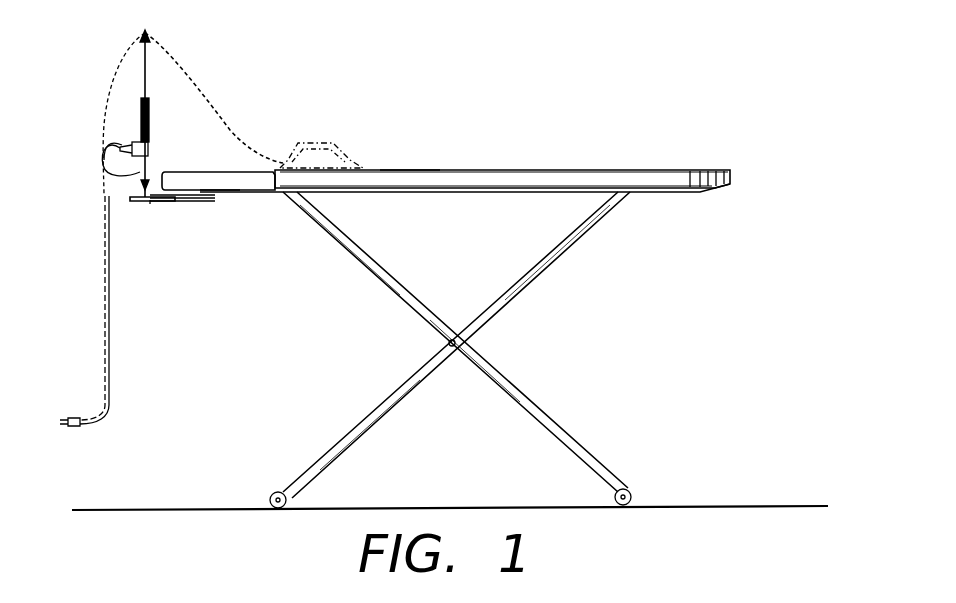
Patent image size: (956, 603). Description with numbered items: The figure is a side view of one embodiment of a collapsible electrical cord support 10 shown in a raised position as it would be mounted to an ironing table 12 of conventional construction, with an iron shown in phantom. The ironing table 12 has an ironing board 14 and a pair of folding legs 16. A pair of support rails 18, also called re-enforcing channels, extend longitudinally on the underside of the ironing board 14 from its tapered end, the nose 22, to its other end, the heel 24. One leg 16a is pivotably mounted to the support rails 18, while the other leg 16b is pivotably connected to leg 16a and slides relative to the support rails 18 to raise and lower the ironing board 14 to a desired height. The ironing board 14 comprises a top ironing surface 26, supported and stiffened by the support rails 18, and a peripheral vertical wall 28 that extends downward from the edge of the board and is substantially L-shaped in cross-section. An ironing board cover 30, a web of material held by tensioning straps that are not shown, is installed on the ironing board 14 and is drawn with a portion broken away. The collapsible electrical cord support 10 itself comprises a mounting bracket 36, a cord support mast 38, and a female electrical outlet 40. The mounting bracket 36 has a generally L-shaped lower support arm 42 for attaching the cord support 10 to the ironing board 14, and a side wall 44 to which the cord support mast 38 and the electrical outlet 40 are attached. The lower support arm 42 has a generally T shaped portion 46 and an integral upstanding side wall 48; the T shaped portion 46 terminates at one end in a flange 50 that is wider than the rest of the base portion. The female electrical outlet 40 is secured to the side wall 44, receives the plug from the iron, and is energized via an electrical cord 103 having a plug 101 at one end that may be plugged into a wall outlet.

The collapsible electrical cord support 10 is at (148, 204).
The ironing table 12 is at (452, 150).
The ironing board 14 is at (592, 178).
The folding legs 16 is at (553, 427).
The leg 16a is at (386, 270).
The leg 16b is at (533, 273).
The support rails 18 is at (690, 190).
The nose 22 is at (733, 176).
The heel 24 is at (175, 168).
The top ironing surface 26 is at (406, 170).
The peripheral vertical wall 28 is at (500, 178).
The ironing board cover 30 is at (277, 170).
The mounting bracket 36 is at (157, 200).
The cord support mast 38 is at (148, 55).
The female electrical outlet 40 is at (142, 160).
The lower support arm 42 is at (180, 200).
The side wall 44 is at (158, 145).
The T shaped portion 46 is at (190, 200).
The upstanding side wall 48 is at (145, 198).
The flange 50 is at (207, 195).
The plug 101 is at (70, 428).
The electrical cord 103 is at (112, 357).